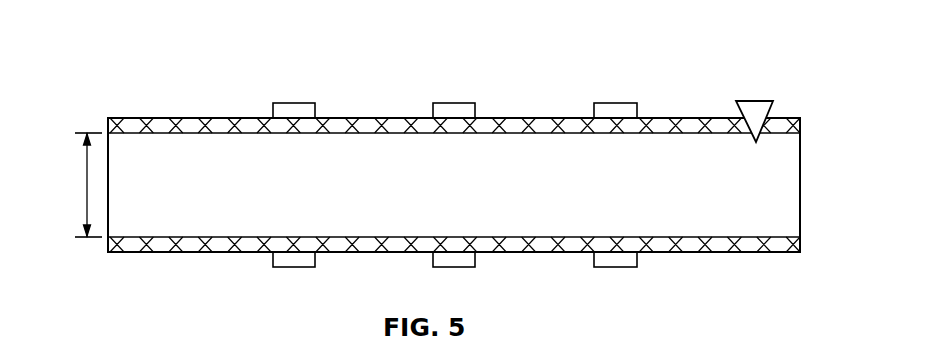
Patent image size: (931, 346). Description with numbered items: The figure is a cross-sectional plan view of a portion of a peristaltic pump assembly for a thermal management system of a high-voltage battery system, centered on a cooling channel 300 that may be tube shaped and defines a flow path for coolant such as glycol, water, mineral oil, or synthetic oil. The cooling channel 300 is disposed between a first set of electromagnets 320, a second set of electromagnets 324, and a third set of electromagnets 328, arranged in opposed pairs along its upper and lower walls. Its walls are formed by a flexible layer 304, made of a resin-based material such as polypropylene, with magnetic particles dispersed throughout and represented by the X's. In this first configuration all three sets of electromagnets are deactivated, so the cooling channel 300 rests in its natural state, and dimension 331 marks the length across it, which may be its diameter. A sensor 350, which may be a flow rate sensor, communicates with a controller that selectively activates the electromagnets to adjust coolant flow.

The cooling channel 300 is at (120, 96).
The layer 304 is at (150, 118).
The first set of electromagnets 320 is at (295, 103).
The second set of electromagnets 324 is at (455, 103).
The third set of electromagnets 328 is at (615, 103).
The dimension 331 is at (87, 195).
The sensor 350 is at (768, 107).